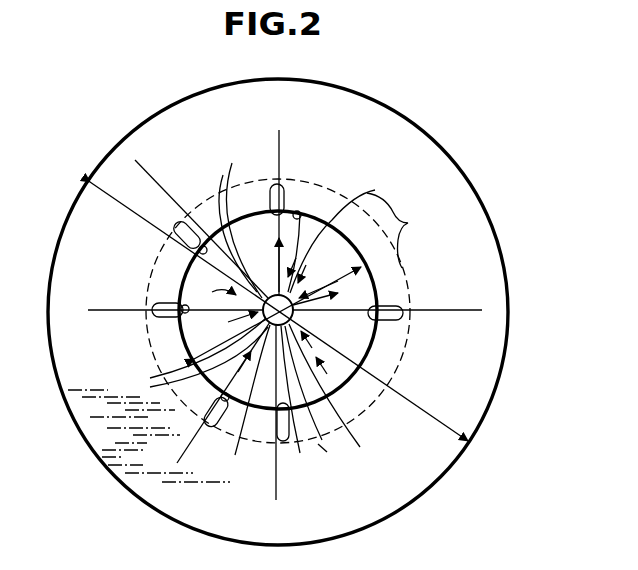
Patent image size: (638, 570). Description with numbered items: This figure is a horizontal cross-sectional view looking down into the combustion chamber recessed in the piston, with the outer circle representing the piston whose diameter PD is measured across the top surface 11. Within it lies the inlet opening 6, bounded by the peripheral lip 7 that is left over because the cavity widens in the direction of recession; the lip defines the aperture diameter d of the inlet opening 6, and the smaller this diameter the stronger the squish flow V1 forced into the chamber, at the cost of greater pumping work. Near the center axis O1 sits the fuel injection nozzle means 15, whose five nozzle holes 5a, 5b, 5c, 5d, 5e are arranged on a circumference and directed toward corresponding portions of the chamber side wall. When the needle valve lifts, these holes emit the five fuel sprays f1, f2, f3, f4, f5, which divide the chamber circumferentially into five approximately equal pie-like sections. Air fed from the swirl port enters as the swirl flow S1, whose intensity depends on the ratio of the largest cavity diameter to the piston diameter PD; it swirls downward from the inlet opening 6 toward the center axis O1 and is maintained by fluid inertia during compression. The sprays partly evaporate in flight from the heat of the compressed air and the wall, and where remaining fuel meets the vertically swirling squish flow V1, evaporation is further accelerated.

The top surface 11 is at (503, 262).
The inlet opening 6 is at (300, 210).
The lip 7 is at (330, 196).
The center axis O1 is at (296, 290).
The squish flow V1 is at (279, 151).
The piston diameter PD is at (279, 309).
The aperture diameter of the inlet opening d is at (226, 347).
The nozzle hole 5a is at (215, 222).
The nozzle hole 5b is at (164, 363).
The nozzle hole 5c is at (274, 405).
The nozzle hole 5d is at (312, 325).
The nozzle hole 5e is at (330, 222).
The swirl flow S1 is at (398, 230).
The fuel injection nozzle means 15 is at (334, 454).
The fuel spray f1 is at (238, 302).
The fuel spray f2 is at (255, 358).
The fuel spray f3 is at (310, 360).
The fuel spray f4 is at (317, 306).
The fuel spray f5 is at (277, 258).